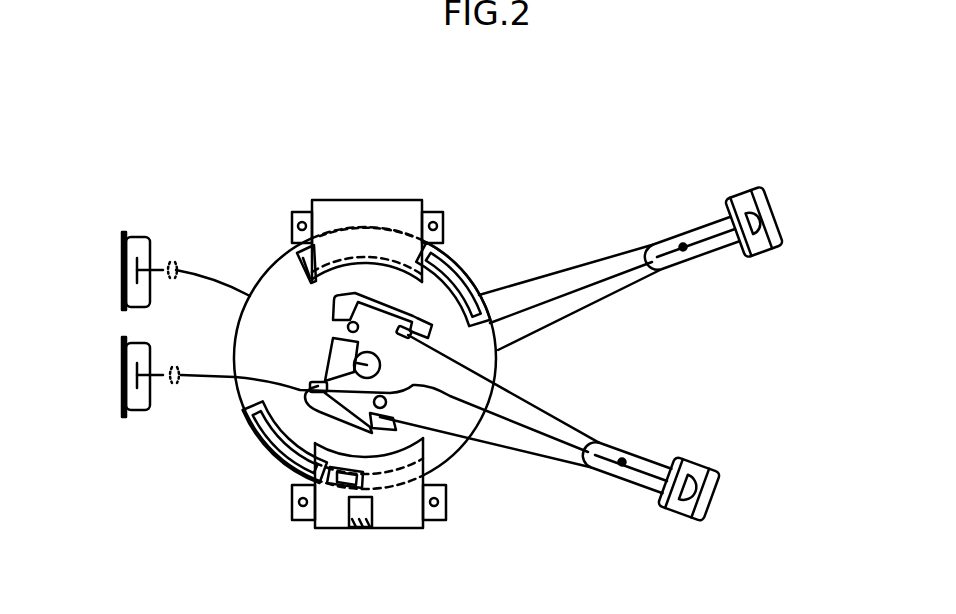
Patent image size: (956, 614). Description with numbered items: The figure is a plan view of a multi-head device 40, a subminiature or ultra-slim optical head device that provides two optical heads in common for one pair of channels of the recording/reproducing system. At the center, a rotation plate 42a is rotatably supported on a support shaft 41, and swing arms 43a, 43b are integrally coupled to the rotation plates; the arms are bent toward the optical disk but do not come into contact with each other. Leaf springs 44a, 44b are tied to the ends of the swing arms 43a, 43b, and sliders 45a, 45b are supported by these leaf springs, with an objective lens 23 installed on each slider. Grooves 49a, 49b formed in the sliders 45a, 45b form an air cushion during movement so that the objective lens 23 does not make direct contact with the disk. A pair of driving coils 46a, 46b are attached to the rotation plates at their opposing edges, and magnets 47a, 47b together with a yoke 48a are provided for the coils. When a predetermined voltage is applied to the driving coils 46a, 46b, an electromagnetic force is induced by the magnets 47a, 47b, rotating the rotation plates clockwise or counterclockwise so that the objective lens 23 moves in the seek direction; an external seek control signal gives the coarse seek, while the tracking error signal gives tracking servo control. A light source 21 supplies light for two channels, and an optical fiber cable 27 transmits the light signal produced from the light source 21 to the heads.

The light source 21 is at (122, 270).
The objective lens 23 is at (731, 210).
The optical fiber cable 27 is at (214, 283).
The multi-head device 40 is at (244, 180).
The support shaft 41 is at (340, 350).
The rotation plate 42a is at (450, 453).
The swing arm 43a is at (530, 404).
The swing arm 43b is at (545, 276).
The leaf spring 44a is at (612, 475).
The leaf spring 44b is at (679, 263).
The slider 45a is at (700, 506).
The slider 45b is at (782, 240).
The driving coil 46a is at (270, 449).
The driving coil 46b is at (450, 258).
The magnet 47a is at (351, 527).
The magnet 47b is at (366, 230).
The yoke 48a is at (322, 200).
The groove 49a is at (680, 503).
The groove 49b is at (762, 243).